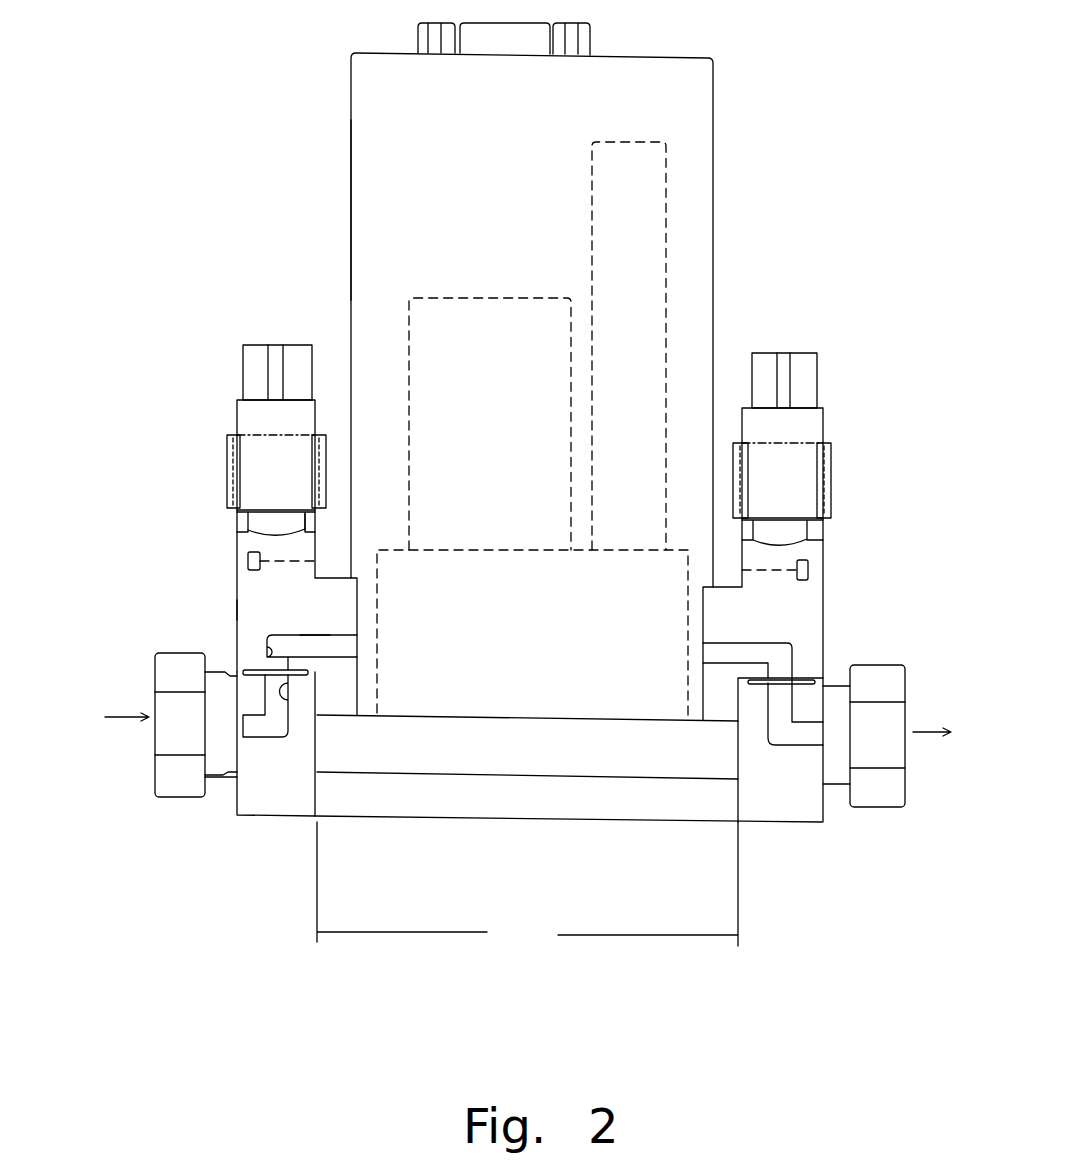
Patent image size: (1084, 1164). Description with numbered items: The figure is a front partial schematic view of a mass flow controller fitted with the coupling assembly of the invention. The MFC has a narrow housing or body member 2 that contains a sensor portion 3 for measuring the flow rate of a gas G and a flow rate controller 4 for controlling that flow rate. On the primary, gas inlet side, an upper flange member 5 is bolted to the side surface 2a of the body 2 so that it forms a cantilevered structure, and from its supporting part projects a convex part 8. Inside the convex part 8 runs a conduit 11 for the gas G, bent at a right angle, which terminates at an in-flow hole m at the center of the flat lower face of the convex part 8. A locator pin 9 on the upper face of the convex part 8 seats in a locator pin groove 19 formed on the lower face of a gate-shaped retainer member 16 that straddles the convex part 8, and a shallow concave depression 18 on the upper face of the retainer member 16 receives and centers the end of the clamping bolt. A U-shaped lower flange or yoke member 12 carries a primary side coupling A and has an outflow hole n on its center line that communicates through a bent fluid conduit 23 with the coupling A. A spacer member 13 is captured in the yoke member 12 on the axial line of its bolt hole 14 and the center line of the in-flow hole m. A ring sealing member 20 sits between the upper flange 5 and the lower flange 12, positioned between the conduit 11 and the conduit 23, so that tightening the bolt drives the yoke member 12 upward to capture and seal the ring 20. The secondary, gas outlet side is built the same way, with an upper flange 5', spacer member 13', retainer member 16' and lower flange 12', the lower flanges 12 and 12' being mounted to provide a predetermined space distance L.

The body member 2 is at (722, 124).
The side surface 2a is at (349, 120).
The sensor portion 3 is at (465, 298).
The flow rate controller 4 is at (667, 250).
The upper flange member 5 is at (258, 612).
The upper flange 5' is at (798, 631).
The convex part 8 is at (250, 617).
The locator pin 9 is at (237, 540).
The conduit 11 is at (310, 637).
The lower flange 12 is at (276, 795).
The lower flange 12' is at (844, 781).
The spacer member 13 is at (239, 445).
The spacer member 13' is at (821, 419).
The bolt hole 14 is at (255, 440).
The retainer member 16 is at (228, 480).
The retainer member 16' is at (826, 540).
The concave depression 18 is at (280, 528).
The locator pin groove 19 is at (240, 556).
The ring sealing member 20 is at (240, 688).
The fluid conduit 23 is at (263, 737).
The primary side coupling A is at (218, 778).
The in-flow hole m is at (265, 642).
The outflow hole n is at (287, 703).
The gas G is at (113, 720).
The space distance L is at (527, 890).